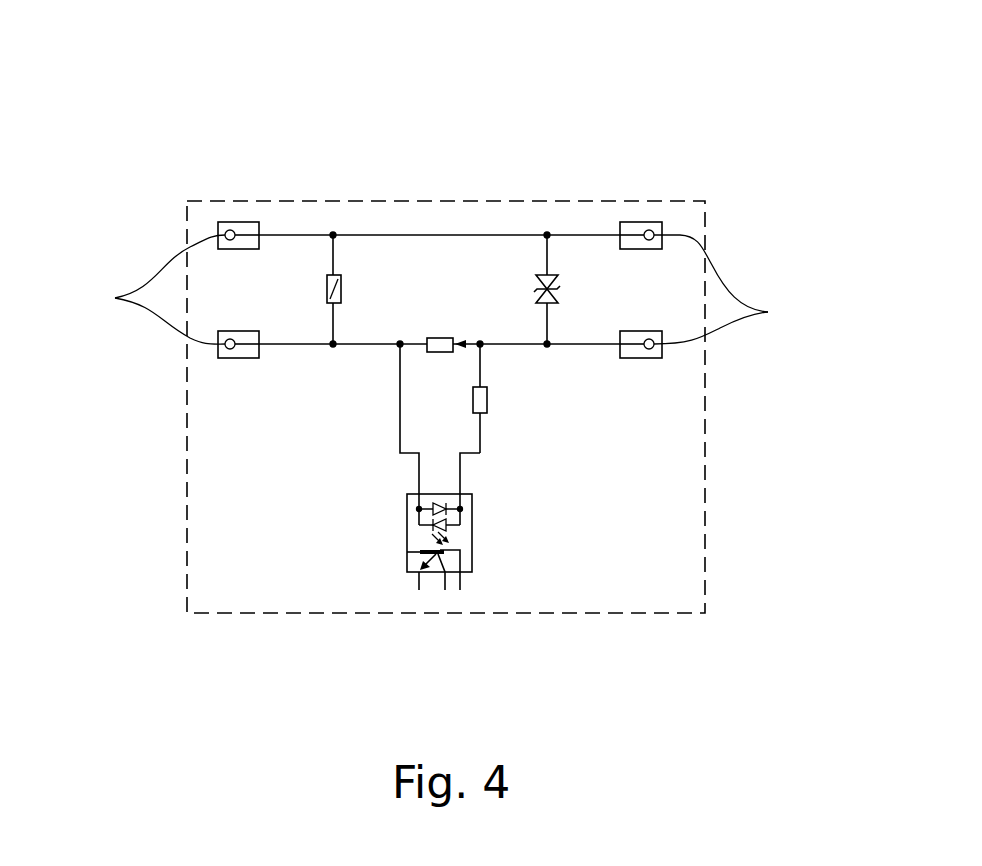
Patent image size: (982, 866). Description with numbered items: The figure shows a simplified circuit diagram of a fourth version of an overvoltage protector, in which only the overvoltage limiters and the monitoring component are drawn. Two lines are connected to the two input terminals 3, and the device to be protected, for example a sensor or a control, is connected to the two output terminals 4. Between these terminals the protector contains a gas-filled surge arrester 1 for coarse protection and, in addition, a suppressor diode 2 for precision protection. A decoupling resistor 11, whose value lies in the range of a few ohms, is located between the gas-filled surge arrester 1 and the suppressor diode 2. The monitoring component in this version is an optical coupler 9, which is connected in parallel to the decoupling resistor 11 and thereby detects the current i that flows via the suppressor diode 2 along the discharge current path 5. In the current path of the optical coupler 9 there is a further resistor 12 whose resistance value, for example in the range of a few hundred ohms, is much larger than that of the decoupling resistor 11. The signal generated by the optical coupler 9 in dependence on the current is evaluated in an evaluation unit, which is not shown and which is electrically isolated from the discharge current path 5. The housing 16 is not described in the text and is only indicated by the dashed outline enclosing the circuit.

The gas-filled surge arrester 1 is at (328, 278).
The suppressor diode 2 is at (560, 258).
The input terminals 3 is at (177, 290).
The output terminals 4 is at (706, 290).
The discharge current path 5 is at (540, 198).
The optical coupler 9 is at (390, 555).
The decoupling resistor 11 is at (443, 338).
The resistor 12 is at (483, 400).
The housing 16 is at (558, 613).